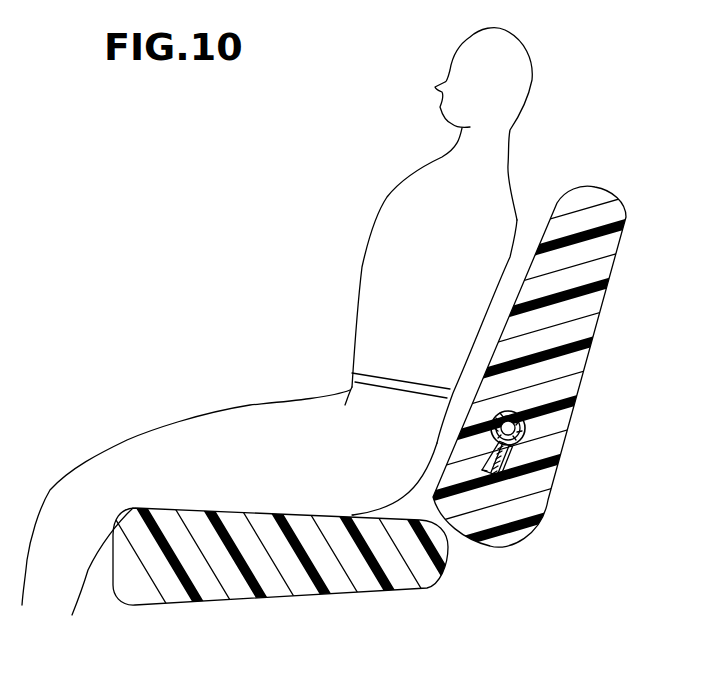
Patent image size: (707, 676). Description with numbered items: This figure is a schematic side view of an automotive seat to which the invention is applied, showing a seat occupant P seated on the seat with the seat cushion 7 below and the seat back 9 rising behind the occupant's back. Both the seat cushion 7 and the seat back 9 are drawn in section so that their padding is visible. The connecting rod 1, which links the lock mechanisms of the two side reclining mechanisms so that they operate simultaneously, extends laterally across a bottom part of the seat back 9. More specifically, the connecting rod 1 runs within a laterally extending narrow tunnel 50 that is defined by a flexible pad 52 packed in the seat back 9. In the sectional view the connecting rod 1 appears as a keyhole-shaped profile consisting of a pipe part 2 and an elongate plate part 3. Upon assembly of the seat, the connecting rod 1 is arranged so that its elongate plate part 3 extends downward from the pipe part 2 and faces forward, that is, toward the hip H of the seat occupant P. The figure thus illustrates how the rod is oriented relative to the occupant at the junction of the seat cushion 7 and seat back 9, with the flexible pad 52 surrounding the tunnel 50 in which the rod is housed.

The seat occupant P is at (354, 289).
The hip of a seat occupant H is at (393, 475).
The seat back 9 is at (596, 324).
The seat cushion 7 is at (357, 590).
The narrow tunnel 50 is at (513, 412).
The flexible pad 52 is at (565, 489).
The pipe part 2 is at (512, 445).
The elongate plate part 3 is at (505, 471).
The connecting rod 1 is at (490, 472).